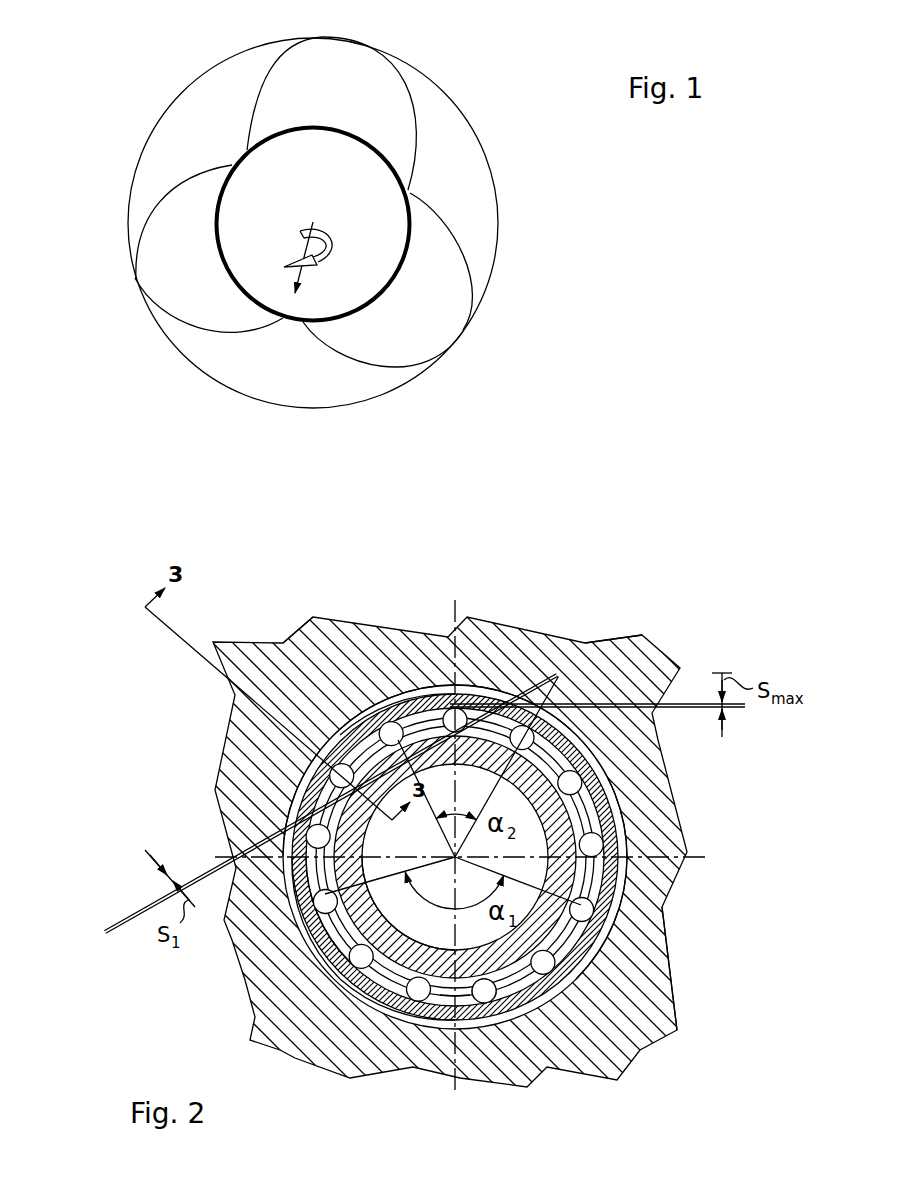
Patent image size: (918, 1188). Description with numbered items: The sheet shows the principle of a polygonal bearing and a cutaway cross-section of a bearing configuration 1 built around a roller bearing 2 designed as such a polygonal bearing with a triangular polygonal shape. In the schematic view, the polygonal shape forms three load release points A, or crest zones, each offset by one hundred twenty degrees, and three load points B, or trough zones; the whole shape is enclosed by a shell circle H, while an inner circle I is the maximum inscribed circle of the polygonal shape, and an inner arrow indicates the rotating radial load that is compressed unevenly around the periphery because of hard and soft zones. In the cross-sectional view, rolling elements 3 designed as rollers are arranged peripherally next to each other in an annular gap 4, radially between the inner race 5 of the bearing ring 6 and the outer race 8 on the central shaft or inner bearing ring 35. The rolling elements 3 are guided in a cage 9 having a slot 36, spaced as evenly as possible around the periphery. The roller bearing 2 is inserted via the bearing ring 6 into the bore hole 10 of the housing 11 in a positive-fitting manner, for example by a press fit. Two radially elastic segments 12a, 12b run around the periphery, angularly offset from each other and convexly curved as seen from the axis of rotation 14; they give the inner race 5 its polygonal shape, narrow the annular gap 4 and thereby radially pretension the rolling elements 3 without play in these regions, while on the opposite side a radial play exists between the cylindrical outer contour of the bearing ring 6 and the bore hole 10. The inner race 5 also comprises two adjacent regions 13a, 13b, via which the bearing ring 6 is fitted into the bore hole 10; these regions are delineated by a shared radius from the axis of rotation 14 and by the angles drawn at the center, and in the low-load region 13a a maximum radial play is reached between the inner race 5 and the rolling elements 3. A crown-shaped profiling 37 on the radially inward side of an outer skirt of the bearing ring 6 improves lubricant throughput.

In FIG. 1, the load release points A is at (137, 280).
In FIG. 1, the load points B is at (410, 190).
In FIG. 1, the shell circle H is at (157, 122).
In FIG. 1, the inner circle I is at (363, 137).
In FIG. 2, the bearing configuration 1 is at (312, 612).
In FIG. 2, the roller bearing 2 is at (557, 965).
In FIG. 2, the rolling elements 3 is at (407, 1003).
In FIG. 2, the annular gap 4 is at (440, 740).
In FIG. 2, the inner race 5 is at (407, 963).
In FIG. 2, the bearing ring 6 is at (380, 718).
In FIG. 2, the outer race 8 is at (342, 950).
In FIG. 2, the cage 9 is at (592, 950).
In FIG. 2, the bore hole 10 is at (600, 920).
In FIG. 2, the housing 11 is at (623, 663).
In FIG. 2, the radially elastic segment 12a is at (322, 740).
In FIG. 2, the radially elastic segment 12b is at (612, 781).
In FIG. 2, the adjacent region 13a is at (392, 733).
In FIG. 2, the adjacent region 13b is at (490, 997).
In FIG. 2, the axis of rotation 14 is at (345, 936).
In FIG. 2, the inner bearing ring 35 is at (414, 722).
In FIG. 2, the slot 36 is at (460, 993).
In FIG. 2, the profiling 37 is at (277, 643).